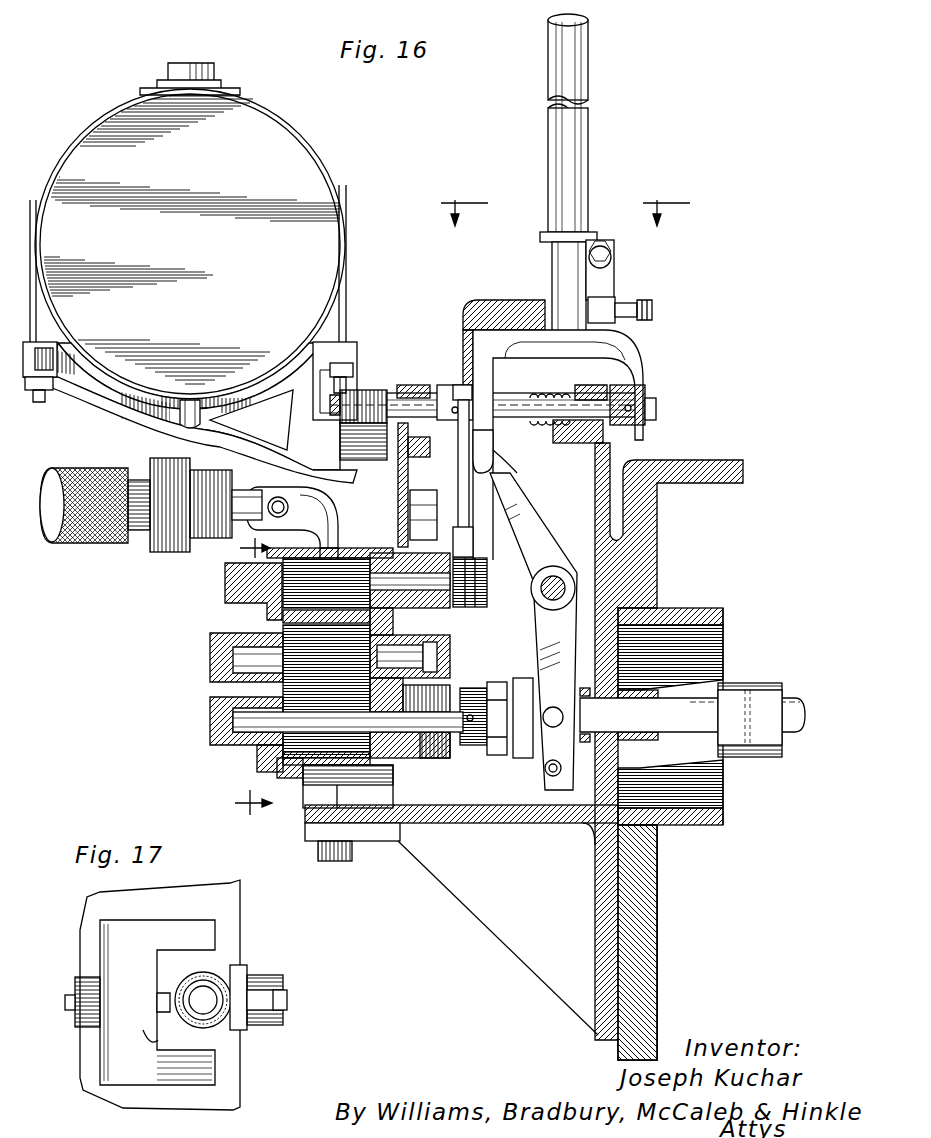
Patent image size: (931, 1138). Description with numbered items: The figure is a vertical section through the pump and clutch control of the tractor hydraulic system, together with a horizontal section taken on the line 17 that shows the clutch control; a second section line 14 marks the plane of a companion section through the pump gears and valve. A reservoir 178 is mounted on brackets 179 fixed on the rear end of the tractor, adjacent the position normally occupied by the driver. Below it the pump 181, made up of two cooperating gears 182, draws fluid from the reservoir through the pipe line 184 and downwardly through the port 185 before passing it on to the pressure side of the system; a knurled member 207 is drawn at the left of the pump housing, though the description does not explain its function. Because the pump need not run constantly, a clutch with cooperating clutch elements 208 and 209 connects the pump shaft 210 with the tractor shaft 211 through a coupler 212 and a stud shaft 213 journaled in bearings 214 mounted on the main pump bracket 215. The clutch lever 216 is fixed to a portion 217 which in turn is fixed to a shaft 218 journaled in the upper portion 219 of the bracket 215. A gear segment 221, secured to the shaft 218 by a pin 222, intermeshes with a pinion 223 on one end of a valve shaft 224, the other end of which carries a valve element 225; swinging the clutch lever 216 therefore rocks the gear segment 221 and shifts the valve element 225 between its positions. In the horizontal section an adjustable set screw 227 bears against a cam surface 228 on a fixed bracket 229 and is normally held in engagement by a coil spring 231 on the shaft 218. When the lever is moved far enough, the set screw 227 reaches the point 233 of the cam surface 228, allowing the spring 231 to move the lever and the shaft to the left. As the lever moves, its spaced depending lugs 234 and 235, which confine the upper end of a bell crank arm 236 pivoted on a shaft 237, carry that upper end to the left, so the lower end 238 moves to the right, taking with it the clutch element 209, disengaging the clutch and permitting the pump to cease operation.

In FIG. 16, the section line 14 is at (237, 677).
In FIG. 16, the section line 17 is at (565, 199).
In FIG. 16, the reservoir 178 is at (118, 125).
In FIG. 16, the brackets 179 is at (122, 412).
In FIG. 16, the pump 181 is at (215, 742).
In FIG. 16, the cooperating gears 182 is at (300, 660).
In FIG. 16, the pipe line 184 is at (183, 413).
In FIG. 16, the port 185 is at (225, 576).
In FIG. 16, the knurled knob 207 is at (140, 530).
In FIG. 16, the clutch element 208 is at (497, 750).
In FIG. 16, the clutch element 209 is at (518, 822).
In FIG. 16, the shaft 210 is at (422, 732).
In FIG. 16, the tractor shaft 211 is at (800, 735).
In FIG. 16, the coupler 212 is at (755, 758).
In FIG. 16, the stud shaft 213 is at (680, 705).
In FIG. 16, the bearings 214 is at (650, 742).
In FIG. 16, the main pump bracket 215 is at (580, 981).
In FIG. 16, the clutch lever 216 is at (582, 148).
In FIG. 17, the clutch lever 216 is at (225, 1027).
In FIG. 16, the portion 217 is at (640, 382).
In FIG. 17, the portion 217 is at (284, 983).
In FIG. 16, the shaft 218 is at (656, 407).
In FIG. 17, the shaft 218 is at (65, 1002).
In FIG. 16, the upper portion 219 is at (605, 438).
In FIG. 16, the gear segment 221 is at (468, 482).
In FIG. 16, the pin 222 is at (455, 408).
In FIG. 16, the pinion 223 is at (475, 600).
In FIG. 16, the valve shaft 224 is at (415, 590).
In FIG. 16, the valve element 225 is at (265, 590).
In FIG. 16, the adjustable set screw 227 is at (645, 306).
In FIG. 17, the adjustable set screw 227 is at (160, 1005).
In FIG. 16, the cam surface 228 is at (540, 300).
In FIG. 17, the cam surface 228 is at (165, 968).
In FIG. 16, the fixed bracket 229 is at (478, 300).
In FIG. 17, the fixed bracket 229 is at (120, 948).
In FIG. 16, the coil spring 231 is at (565, 390).
In FIG. 17, the point 233 is at (150, 1043).
In FIG. 16, the depending lug 234 is at (505, 460).
In FIG. 16, the depending lug 235 is at (500, 470).
In FIG. 16, the bell crank arm 236 is at (530, 528).
In FIG. 16, the shaft 237 is at (560, 585).
In FIG. 16, the lower end 238 is at (540, 660).